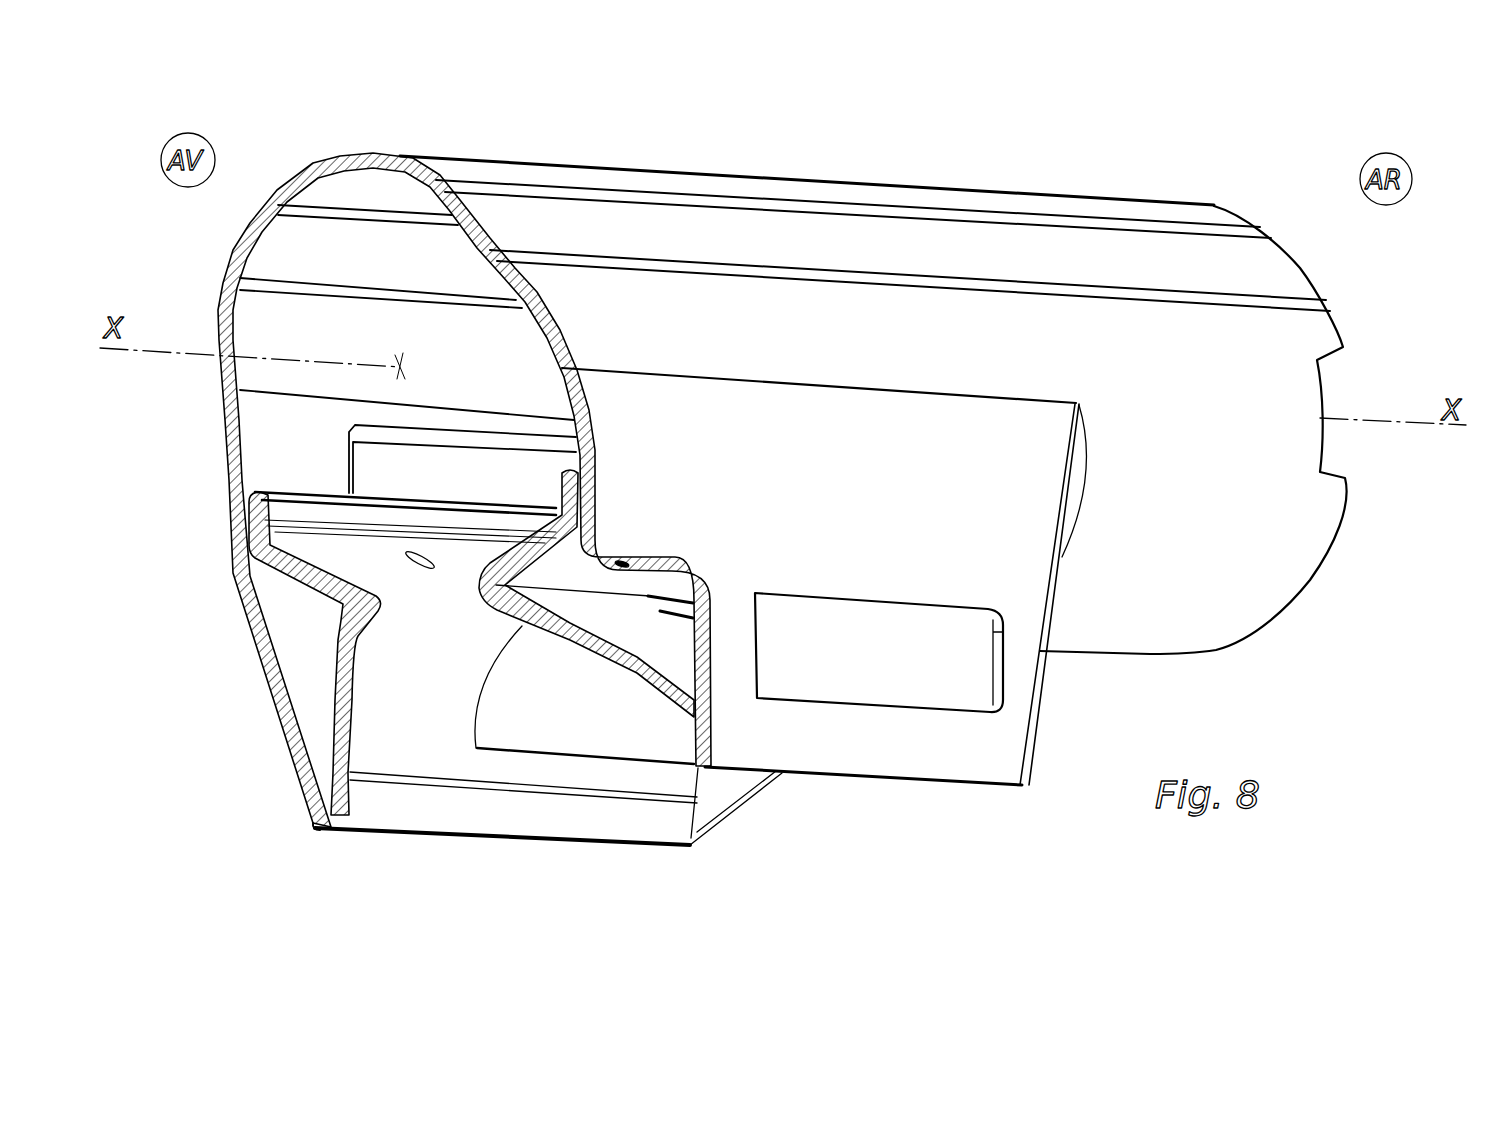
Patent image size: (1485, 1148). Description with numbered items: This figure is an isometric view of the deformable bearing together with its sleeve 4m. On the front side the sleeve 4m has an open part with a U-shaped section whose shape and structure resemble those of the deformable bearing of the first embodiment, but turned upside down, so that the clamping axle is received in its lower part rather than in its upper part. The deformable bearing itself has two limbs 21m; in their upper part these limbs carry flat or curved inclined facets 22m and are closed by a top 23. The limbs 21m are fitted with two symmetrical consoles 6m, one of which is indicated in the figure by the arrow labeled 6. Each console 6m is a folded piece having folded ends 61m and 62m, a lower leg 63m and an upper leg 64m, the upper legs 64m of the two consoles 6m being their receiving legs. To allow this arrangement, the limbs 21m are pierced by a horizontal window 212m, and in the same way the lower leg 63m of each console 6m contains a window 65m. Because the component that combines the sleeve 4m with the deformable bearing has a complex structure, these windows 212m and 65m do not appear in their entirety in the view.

The sleeve 4m is at (1117, 188).
The top 23 is at (550, 161).
The inclined facets 22m is at (640, 232).
The folded end 61m is at (235, 492).
The limbs 21m is at (966, 546).
The horizontal window 212m is at (960, 633).
The clip member 6 is at (604, 614).
The consoles 6m is at (186, 742).
The upper legs 64m is at (514, 516).
The lower leg 63m is at (390, 698).
The window 65m is at (507, 720).
The folded end 62m is at (333, 812).